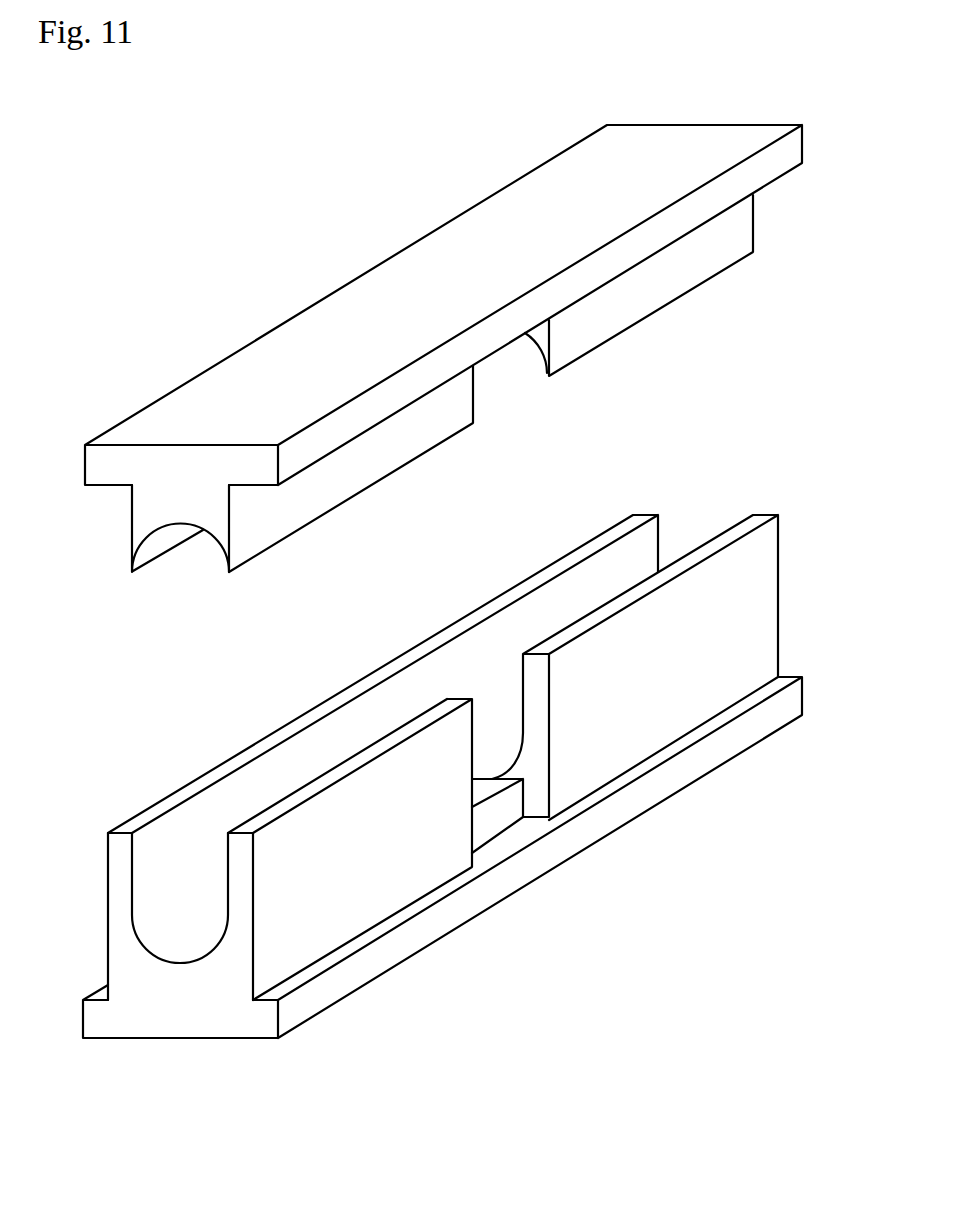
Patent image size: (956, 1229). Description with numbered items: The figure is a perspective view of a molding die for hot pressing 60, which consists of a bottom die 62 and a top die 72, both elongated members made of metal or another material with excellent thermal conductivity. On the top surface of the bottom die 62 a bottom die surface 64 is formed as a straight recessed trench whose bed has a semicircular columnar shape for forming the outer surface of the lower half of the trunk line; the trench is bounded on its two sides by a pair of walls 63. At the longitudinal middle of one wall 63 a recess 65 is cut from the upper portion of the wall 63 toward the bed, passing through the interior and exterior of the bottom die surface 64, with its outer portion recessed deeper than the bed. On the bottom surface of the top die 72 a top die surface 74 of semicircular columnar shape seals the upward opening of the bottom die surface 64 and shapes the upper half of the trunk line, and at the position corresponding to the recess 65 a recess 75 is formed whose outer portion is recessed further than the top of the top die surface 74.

The molding die for hot pressing 60 is at (408, 150).
The bottom die 62 is at (624, 830).
The wall 63 is at (650, 528).
The bottom die surface 64 is at (148, 899).
The recess 65 is at (537, 745).
The top die 72 is at (528, 164).
The top die surface 74 is at (172, 533).
The recess 75 is at (543, 343).